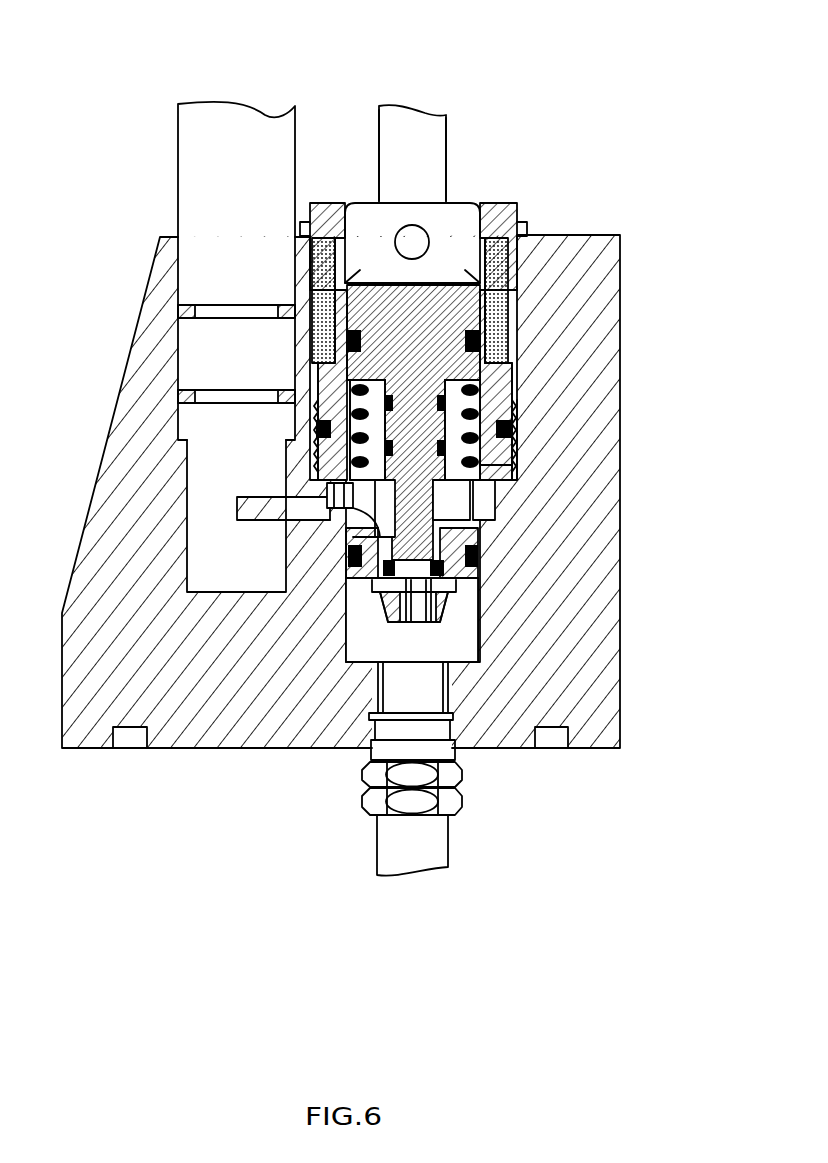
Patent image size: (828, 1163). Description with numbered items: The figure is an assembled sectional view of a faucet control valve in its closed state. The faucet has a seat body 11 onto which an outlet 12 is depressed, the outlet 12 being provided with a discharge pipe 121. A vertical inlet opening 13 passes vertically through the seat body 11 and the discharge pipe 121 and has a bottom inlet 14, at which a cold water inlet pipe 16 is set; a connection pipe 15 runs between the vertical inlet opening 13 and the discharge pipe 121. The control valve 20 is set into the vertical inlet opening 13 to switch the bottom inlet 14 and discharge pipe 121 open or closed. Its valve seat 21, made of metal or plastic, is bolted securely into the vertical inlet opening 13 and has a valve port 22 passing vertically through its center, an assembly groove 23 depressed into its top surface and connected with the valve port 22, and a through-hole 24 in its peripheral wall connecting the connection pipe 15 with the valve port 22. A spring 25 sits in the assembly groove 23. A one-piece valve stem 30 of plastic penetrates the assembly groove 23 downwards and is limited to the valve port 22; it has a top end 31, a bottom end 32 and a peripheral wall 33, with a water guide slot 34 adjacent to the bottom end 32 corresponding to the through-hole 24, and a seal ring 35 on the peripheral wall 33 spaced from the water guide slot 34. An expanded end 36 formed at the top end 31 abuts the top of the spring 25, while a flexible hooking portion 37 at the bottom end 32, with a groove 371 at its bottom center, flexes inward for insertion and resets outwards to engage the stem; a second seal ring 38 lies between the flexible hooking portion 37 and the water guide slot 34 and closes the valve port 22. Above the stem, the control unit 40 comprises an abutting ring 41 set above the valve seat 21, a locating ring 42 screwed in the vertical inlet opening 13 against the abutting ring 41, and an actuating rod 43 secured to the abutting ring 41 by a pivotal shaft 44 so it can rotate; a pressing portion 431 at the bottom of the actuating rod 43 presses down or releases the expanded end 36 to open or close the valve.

The seat body 11 is at (620, 512).
The outlet 12 is at (178, 236).
The discharge pipe 121 is at (178, 196).
The vertical inlet opening 13 is at (520, 420).
The bottom inlet 14 is at (465, 660).
The connection pipe 15 is at (340, 505).
The cold water inlet pipe 16 is at (448, 832).
The control valve 20 is at (512, 372).
The valve seat 21 is at (505, 400).
The valve port 22 is at (470, 548).
The assembly groove 23 is at (490, 500).
The through-hole 24 is at (305, 538).
The spring 25 is at (318, 376).
The one-piece valve stem 30 is at (425, 492).
The top end 31 is at (492, 338).
The bottom end 32 is at (455, 572).
The peripheral wall 33 is at (472, 475).
The water guide slot 34 is at (350, 558).
The seal ring 35 is at (320, 448).
The expanded end 36 is at (490, 300).
The flexible hooking portion 37 is at (480, 630).
The groove 371 is at (416, 604).
The second seal ring 38 is at (440, 598).
The control unit 40 is at (456, 158).
The abutting ring 41 is at (497, 278).
The locating ring 42 is at (505, 215).
The actuating rod 43 is at (381, 104).
The pressing portion 431 is at (368, 210).
The pivotal shaft 44 is at (414, 242).